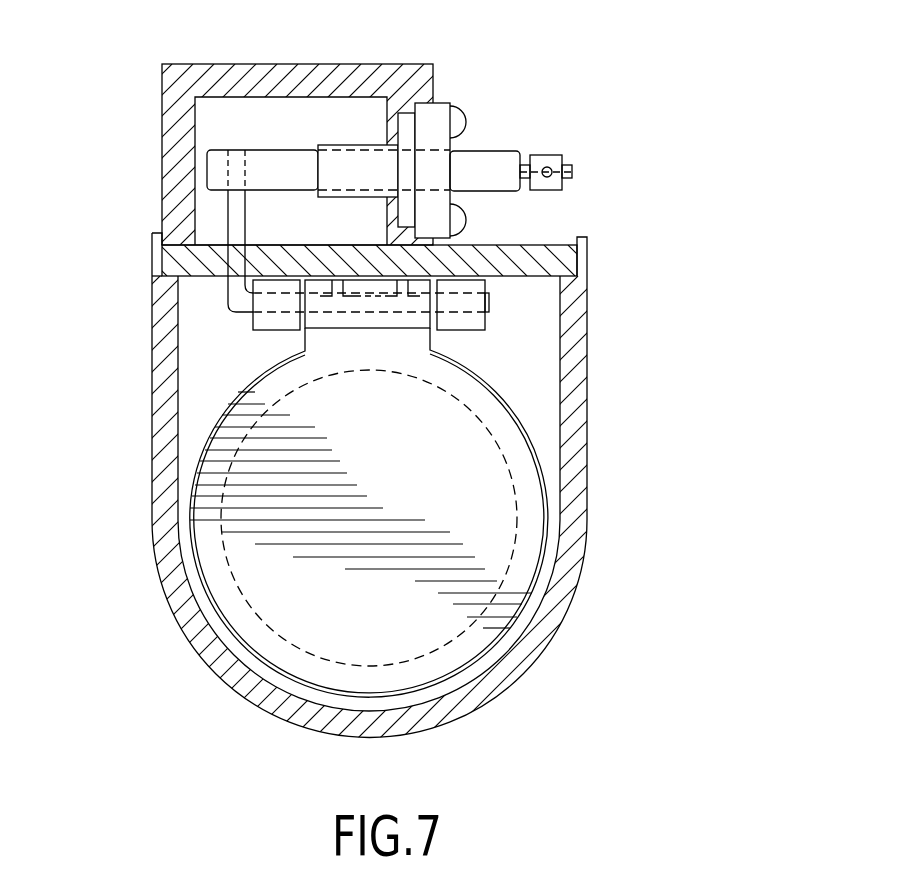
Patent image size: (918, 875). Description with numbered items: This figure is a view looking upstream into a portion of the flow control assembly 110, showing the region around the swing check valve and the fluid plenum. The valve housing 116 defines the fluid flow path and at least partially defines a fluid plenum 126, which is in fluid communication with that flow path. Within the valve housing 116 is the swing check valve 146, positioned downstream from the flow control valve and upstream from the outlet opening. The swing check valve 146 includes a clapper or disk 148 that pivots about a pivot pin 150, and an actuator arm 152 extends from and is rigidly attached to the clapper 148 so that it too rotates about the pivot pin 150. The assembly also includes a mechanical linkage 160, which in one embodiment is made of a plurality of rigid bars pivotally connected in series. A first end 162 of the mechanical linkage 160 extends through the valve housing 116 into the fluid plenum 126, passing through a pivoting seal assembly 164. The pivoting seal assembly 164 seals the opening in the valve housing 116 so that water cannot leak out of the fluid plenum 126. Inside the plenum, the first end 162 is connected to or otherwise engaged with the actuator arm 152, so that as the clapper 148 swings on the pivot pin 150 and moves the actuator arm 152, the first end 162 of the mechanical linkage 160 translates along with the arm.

The flow control assembly 110 is at (680, 156).
The valve housing 116 is at (166, 568).
The fluid plenum 126 is at (270, 132).
The swing check valve 146 is at (493, 363).
The clapper 148 is at (532, 522).
The pivot pin 150 is at (497, 302).
The actuator arm 152 is at (237, 222).
The mechanical linkage 160 is at (494, 145).
The first end of the mechanical linkage 162 is at (298, 150).
The pivoting seal assembly 164 is at (442, 112).